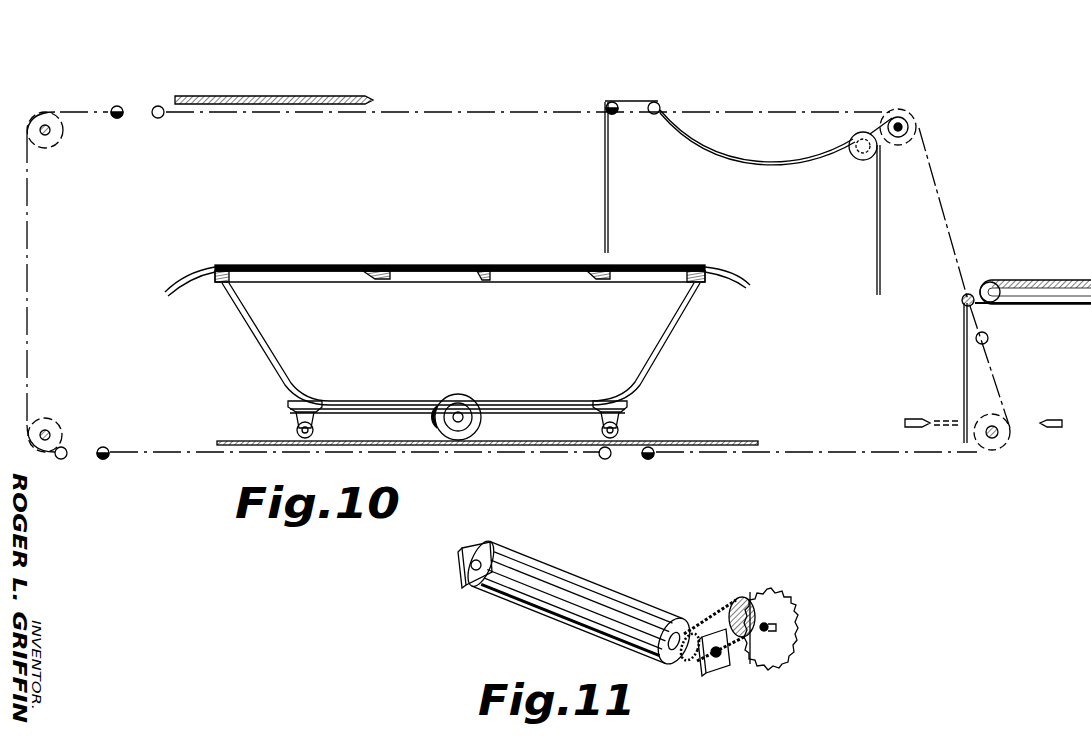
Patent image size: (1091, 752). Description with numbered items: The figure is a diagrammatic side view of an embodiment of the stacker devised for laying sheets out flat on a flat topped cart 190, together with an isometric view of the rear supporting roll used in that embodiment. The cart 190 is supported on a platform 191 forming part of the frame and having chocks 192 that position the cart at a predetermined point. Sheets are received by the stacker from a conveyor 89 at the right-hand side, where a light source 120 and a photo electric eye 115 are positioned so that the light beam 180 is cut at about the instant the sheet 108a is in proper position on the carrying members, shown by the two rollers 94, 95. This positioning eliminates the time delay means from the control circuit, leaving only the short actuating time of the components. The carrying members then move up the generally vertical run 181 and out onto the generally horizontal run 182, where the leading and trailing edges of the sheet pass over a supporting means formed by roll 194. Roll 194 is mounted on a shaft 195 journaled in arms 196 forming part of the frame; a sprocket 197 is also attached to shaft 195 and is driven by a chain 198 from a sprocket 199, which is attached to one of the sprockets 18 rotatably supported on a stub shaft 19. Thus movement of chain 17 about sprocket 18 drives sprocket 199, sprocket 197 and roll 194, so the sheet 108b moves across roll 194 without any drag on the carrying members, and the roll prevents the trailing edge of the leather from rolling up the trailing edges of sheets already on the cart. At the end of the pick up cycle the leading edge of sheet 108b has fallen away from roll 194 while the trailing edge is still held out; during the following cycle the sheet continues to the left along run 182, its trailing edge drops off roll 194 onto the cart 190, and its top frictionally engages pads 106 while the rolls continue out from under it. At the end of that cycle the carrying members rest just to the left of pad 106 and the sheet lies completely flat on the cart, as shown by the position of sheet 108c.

In FIG. 10, the pads 106 is at (335, 93).
In FIG. 10, the sheet 108c is at (393, 268).
In FIG. 10, the cart 190 is at (252, 343).
In FIG. 10, the chocks 192 is at (430, 433).
In FIG. 10, the platform 191 is at (698, 440).
In FIG. 10, the generally horizontal run 182 is at (760, 112).
In FIG. 10, the roll 194 is at (855, 158).
In FIG. 11, the roll 194 is at (600, 598).
In FIG. 10, the chain 17 is at (920, 132).
In FIG. 10, the generally vertical run 181 is at (932, 162).
In FIG. 10, the sheet 108b is at (877, 248).
In FIG. 10, the conveyor 89 is at (1058, 306).
In FIG. 10, the roller 94 is at (963, 303).
In FIG. 10, the roller 95 is at (988, 342).
In FIG. 10, the sheet 108a is at (964, 365).
In FIG. 10, the light beam 180 is at (945, 428).
In FIG. 10, the light source 120 is at (903, 423).
In FIG. 10, the photo electric eye 115 is at (1053, 428).
In FIG. 11, the arms 196 is at (490, 527).
In FIG. 11, the sprocket 197 is at (684, 660).
In FIG. 11, the chain 198 is at (708, 615).
In FIG. 11, the sprocket 199 is at (744, 598).
In FIG. 11, the sprocket 18 is at (788, 603).
In FIG. 11, the stub shaft 19 is at (779, 628).
In FIG. 11, the shaft 195 is at (722, 660).